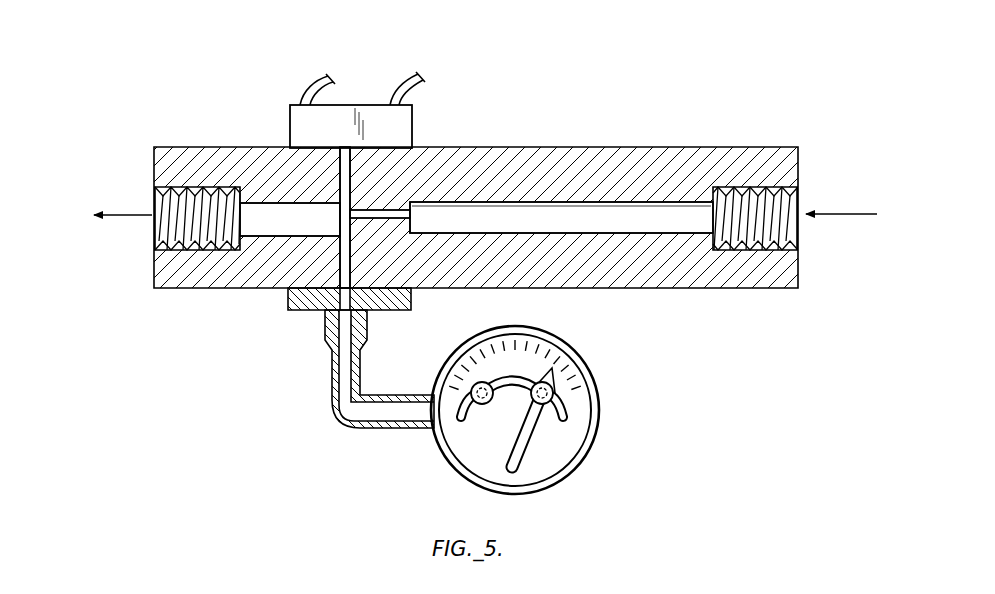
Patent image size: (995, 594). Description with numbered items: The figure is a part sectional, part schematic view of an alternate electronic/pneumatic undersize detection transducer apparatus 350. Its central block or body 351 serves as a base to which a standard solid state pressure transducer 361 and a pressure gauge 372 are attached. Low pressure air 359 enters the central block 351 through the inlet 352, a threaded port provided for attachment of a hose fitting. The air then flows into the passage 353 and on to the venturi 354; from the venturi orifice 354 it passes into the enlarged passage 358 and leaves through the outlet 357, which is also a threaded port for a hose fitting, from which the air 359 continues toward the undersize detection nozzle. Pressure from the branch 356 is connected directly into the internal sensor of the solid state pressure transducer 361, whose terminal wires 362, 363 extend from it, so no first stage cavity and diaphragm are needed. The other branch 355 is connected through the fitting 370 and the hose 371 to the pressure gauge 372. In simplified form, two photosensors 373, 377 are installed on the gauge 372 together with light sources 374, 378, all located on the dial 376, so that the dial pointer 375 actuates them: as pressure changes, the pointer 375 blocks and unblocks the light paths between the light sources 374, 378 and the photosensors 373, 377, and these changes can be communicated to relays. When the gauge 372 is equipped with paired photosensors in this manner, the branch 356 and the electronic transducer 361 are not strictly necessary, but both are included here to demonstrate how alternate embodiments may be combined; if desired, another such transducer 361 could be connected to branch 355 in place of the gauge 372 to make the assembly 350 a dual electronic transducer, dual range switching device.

The undersize detection transducer apparatus 350 is at (686, 77).
The central block or body 351 is at (690, 158).
The inlet 352 is at (810, 188).
The passage 353 is at (575, 210).
The venturi 354 is at (341, 214).
The branch 355 is at (333, 258).
The branch 356 is at (355, 168).
The outlet 357 is at (148, 232).
The enlarged passage 358 is at (262, 212).
The low pressure air 359 is at (133, 214).
The solid state pressure transducer 361 is at (298, 123).
The terminal wire 362 is at (414, 92).
The terminal wire 363 is at (313, 84).
The fitting 370 is at (300, 310).
The hose 371 is at (331, 352).
The pressure gauge 372 is at (436, 432).
The photosensor 373 is at (440, 380).
The light source 374 is at (462, 372).
The dial pointer 375 is at (523, 462).
The dial 376 is at (524, 350).
The photosensor 377 is at (543, 420).
The light source 378 is at (548, 390).